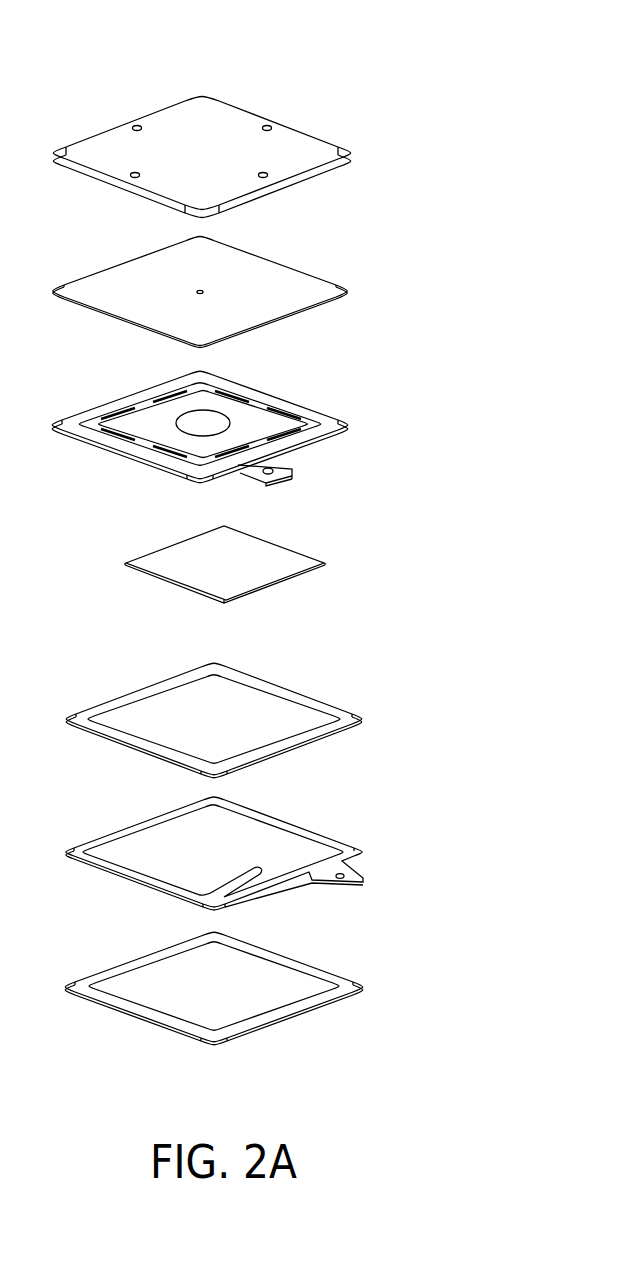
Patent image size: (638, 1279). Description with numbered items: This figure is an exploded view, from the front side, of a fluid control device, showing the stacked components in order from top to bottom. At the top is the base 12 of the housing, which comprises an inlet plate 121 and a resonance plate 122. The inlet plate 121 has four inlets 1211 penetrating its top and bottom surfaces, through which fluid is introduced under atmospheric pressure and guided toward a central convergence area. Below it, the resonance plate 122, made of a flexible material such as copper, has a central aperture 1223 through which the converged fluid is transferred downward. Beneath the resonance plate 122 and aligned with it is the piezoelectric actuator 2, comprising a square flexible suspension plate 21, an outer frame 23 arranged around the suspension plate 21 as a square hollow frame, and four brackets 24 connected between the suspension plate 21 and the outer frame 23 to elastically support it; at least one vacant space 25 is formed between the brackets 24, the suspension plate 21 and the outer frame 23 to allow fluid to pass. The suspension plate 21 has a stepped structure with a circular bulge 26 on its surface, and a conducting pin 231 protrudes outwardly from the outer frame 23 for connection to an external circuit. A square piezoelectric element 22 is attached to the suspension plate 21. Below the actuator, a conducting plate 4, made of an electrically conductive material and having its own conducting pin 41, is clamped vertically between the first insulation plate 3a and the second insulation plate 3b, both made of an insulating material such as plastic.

The base 12 is at (365, 171).
The inlet plate 121 is at (218, 128).
The inlet 1211 is at (271, 127).
The resonance plate 122 is at (355, 313).
The central aperture 1223 is at (204, 290).
The piezoelectric actuator 2 is at (257, 470).
The suspension plate 21 is at (267, 427).
The outer frame 23 is at (317, 412).
The bracket 24 is at (253, 402).
The vacant space 25 is at (186, 378).
The bulge 26 is at (192, 418).
The conducting pin 231 is at (240, 473).
The piezoelectric element 22 is at (249, 564).
The first insulation plate 3a is at (317, 703).
The conducting plate 4 is at (235, 845).
The conducting pin 41 is at (252, 868).
The second insulation plate 3b is at (318, 972).